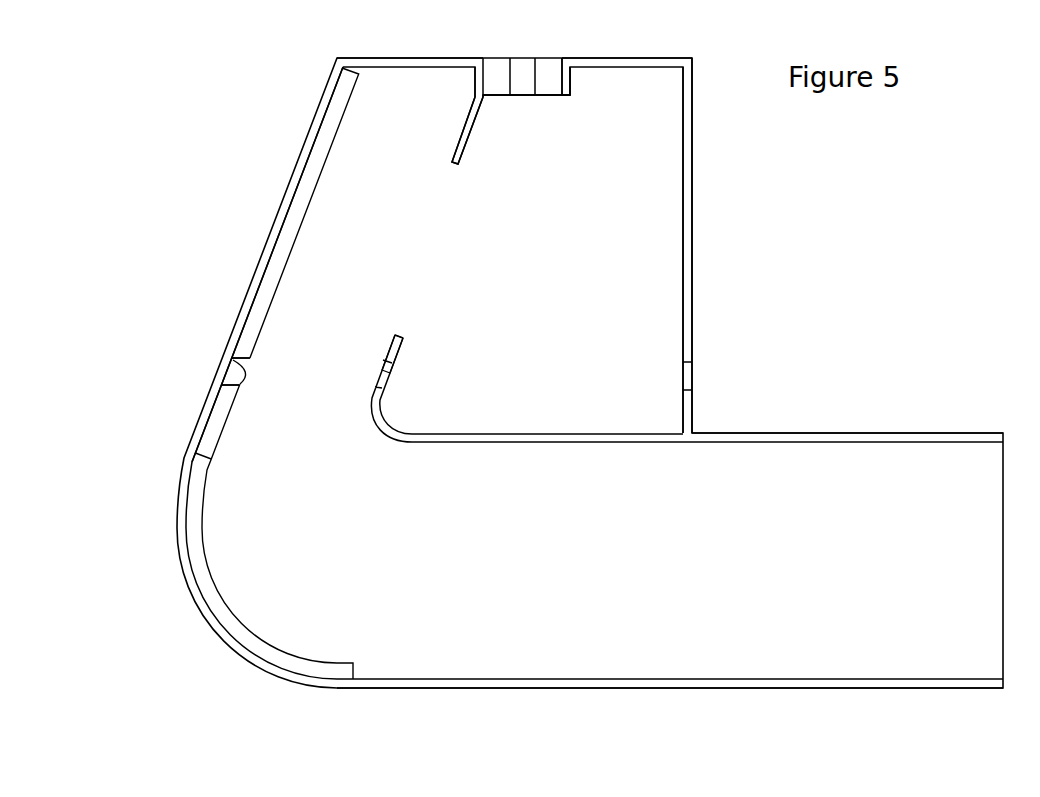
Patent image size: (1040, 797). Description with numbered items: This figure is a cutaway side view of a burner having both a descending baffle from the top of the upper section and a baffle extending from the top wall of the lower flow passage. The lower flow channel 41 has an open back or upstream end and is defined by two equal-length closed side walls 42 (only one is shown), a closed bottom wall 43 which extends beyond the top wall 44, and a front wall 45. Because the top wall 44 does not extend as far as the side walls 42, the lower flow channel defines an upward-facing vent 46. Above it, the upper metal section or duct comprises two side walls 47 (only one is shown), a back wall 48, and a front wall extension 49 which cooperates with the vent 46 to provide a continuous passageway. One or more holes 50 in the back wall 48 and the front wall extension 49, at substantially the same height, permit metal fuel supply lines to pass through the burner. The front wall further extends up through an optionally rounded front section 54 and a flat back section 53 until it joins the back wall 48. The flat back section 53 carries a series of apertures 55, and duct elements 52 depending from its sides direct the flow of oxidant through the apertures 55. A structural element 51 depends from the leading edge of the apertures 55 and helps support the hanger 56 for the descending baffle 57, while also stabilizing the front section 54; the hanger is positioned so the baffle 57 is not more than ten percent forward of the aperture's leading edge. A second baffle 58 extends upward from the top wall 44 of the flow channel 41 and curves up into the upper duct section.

The lower flow channel 41 is at (590, 373).
The side walls 42 is at (594, 373).
The bottom wall 43 is at (670, 668).
The top wall 44 is at (707, 422).
The front wall 45 is at (225, 610).
The vent 46 is at (267, 264).
The side walls 47 is at (400, 326).
The back wall 48 is at (695, 240).
The front wall extension 49 is at (262, 240).
The holes 50 is at (220, 370).
The structural element 51 is at (485, 100).
The duct elements 52 is at (584, 87).
The flat back section 53 is at (627, 42).
The front section 54 is at (410, 42).
The apertures 55 is at (523, 75).
The hanger 56 is at (470, 78).
The baffle 57 is at (453, 133).
The baffle 58 is at (527, 388).